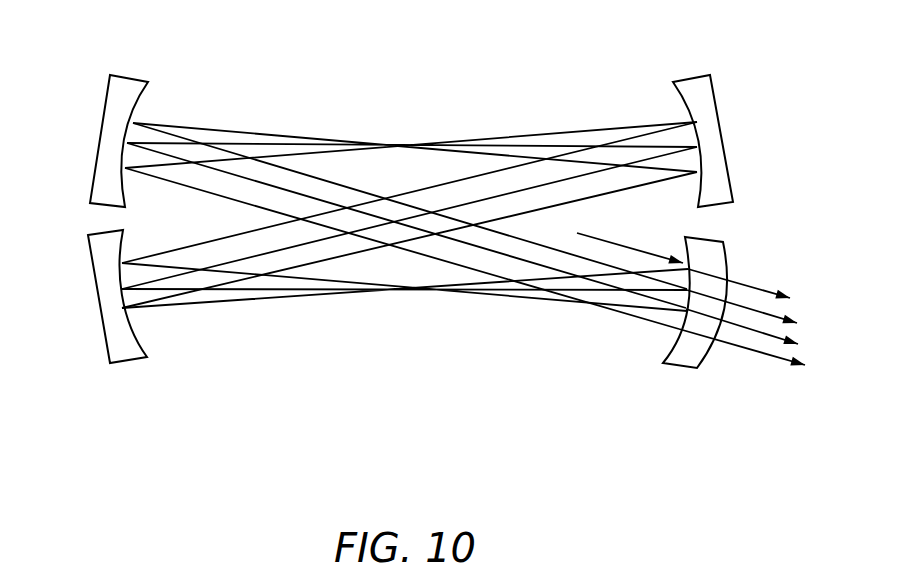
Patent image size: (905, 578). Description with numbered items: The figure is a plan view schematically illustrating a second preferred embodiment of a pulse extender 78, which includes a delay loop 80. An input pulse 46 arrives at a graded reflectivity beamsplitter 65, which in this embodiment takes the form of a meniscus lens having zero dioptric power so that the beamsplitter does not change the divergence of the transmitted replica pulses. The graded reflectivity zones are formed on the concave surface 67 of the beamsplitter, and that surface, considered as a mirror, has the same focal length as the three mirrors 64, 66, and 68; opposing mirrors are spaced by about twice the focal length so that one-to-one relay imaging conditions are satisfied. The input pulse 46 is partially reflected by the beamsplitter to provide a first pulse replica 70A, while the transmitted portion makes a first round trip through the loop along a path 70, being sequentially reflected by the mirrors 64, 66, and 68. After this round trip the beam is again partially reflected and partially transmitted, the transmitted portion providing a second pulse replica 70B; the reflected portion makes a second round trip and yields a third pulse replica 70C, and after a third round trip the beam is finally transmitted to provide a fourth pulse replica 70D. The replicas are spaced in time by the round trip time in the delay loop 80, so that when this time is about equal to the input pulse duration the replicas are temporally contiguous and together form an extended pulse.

The mirror 64 is at (117, 92).
The mirror 66 is at (707, 85).
The concave surface 67 is at (667, 350).
The mirror 68 is at (112, 345).
The graded reflectivity beamsplitter 65 is at (680, 370).
The path 70 is at (218, 303).
The first pulse replica 70A is at (742, 283).
The second pulse replica 70B is at (748, 307).
The third pulse replica 70C is at (727, 330).
The fourth pulse replica 70D is at (745, 352).
The input pulse 46 is at (597, 235).
The pulse extender 78 is at (268, 410).
The delay loop 80 is at (412, 120).